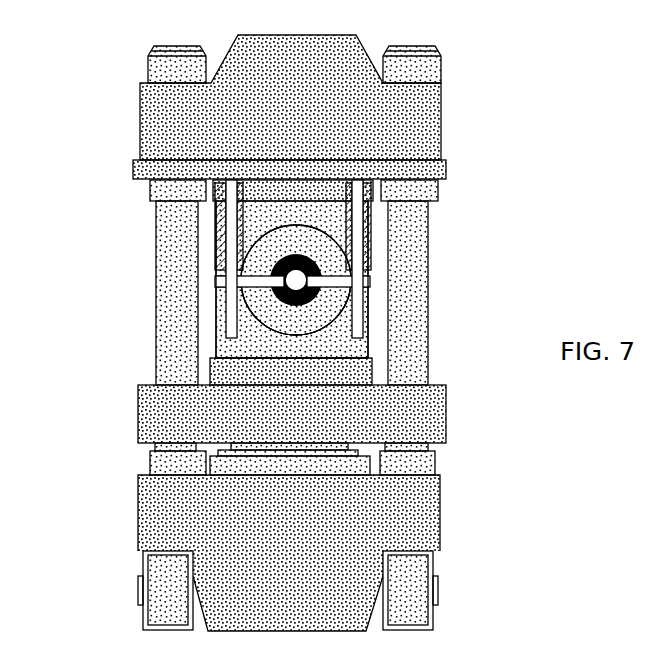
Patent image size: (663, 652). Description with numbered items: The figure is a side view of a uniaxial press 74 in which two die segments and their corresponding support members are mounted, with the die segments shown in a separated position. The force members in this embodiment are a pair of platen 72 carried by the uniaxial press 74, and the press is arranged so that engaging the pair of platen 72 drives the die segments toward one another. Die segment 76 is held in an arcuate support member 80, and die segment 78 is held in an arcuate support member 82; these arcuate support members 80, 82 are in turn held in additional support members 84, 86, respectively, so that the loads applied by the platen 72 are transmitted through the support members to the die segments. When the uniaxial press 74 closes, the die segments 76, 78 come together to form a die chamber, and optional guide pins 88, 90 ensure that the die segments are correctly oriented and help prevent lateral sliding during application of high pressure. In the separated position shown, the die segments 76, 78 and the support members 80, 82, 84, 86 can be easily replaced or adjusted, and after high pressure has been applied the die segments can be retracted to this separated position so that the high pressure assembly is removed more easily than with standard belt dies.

The platen 72 is at (291, 282).
The uniaxial press 74 is at (76, 152).
The die segment 76 is at (237, 293).
The die segment 78 is at (220, 256).
The arcuate support member 80 is at (296, 307).
The arcuate support member 82 is at (301, 275).
The additional support member 84 is at (292, 349).
The additional support member 86 is at (296, 272).
The guide pin 88 is at (355, 212).
The guide pin 90 is at (212, 220).